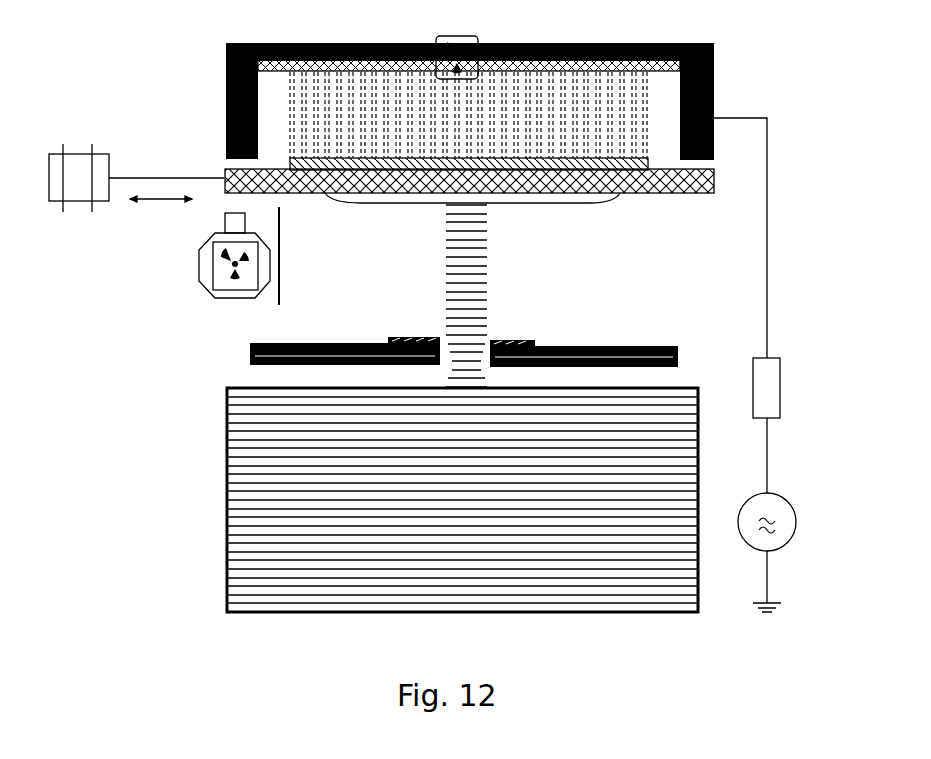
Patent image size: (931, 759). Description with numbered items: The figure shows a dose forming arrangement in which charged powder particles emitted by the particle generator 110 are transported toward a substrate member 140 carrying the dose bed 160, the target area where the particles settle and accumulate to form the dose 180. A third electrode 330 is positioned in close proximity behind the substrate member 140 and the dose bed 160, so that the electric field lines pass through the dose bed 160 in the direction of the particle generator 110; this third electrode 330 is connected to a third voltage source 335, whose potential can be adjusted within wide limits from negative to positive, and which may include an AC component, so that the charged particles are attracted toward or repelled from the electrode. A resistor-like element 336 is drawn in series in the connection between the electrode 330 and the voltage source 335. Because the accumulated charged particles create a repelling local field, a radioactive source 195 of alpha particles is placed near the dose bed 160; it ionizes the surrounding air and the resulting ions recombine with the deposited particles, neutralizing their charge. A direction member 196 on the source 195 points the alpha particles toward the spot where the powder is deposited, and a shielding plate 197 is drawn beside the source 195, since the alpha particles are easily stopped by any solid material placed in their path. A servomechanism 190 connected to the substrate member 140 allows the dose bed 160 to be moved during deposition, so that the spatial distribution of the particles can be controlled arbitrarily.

The particle generator 110 is at (226, 436).
The substrate member 140 is at (697, 197).
The dose bed 160 is at (640, 197).
The dose 180 is at (585, 203).
The servomechanism 190 is at (77, 142).
The radioactive source 195 is at (200, 256).
The direction member 196 is at (224, 221).
The shutter plate 197 is at (280, 225).
The third electrode 330 is at (645, 158).
The third voltage source 335 is at (788, 505).
The resistor 336 is at (781, 397).